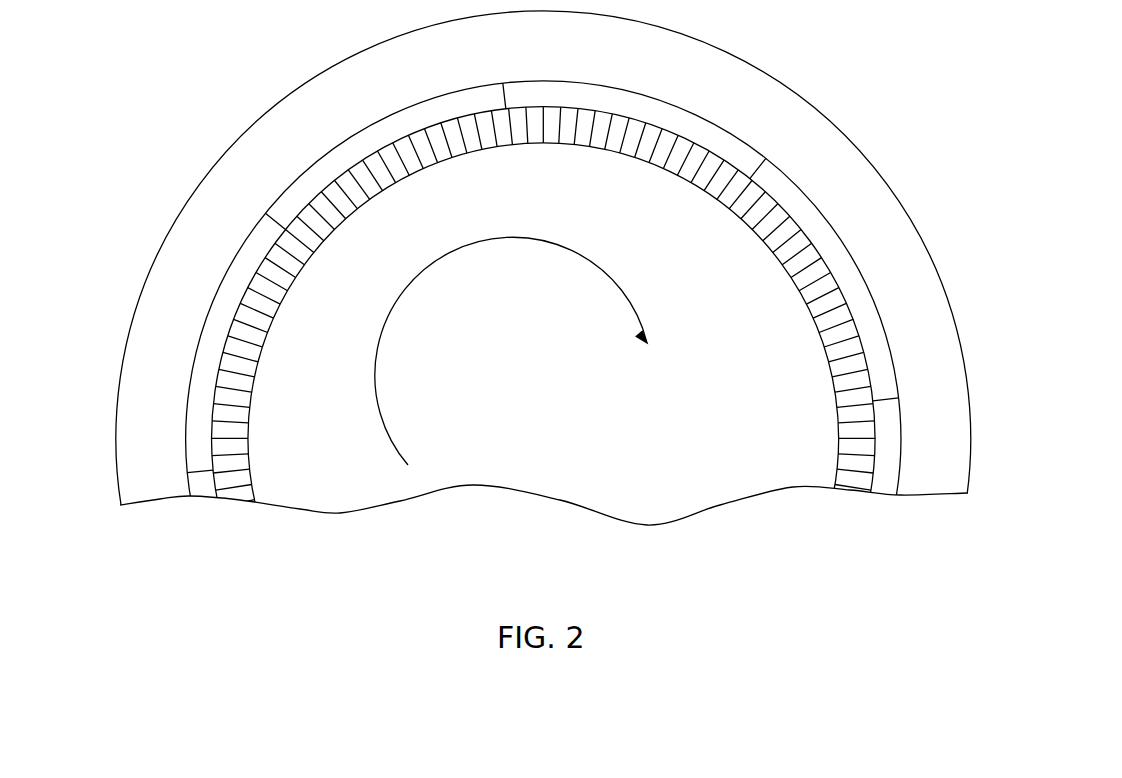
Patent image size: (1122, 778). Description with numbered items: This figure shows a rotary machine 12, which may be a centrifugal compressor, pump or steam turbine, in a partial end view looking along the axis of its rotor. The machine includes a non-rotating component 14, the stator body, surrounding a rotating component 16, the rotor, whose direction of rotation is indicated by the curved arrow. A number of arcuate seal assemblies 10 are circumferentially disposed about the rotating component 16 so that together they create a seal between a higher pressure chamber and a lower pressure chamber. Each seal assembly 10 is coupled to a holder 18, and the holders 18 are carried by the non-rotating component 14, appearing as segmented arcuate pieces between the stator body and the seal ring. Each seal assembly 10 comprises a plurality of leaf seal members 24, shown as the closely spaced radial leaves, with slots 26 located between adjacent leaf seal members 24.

The seal assembly 10 is at (543, 324).
The rotary machine 12 is at (602, 287).
The non-rotating component 14 is at (938, 378).
The rotating component 16 is at (563, 391).
The holder 18 is at (338, 163).
The leaf seal member 24 is at (242, 428).
The slot 26 is at (242, 368).